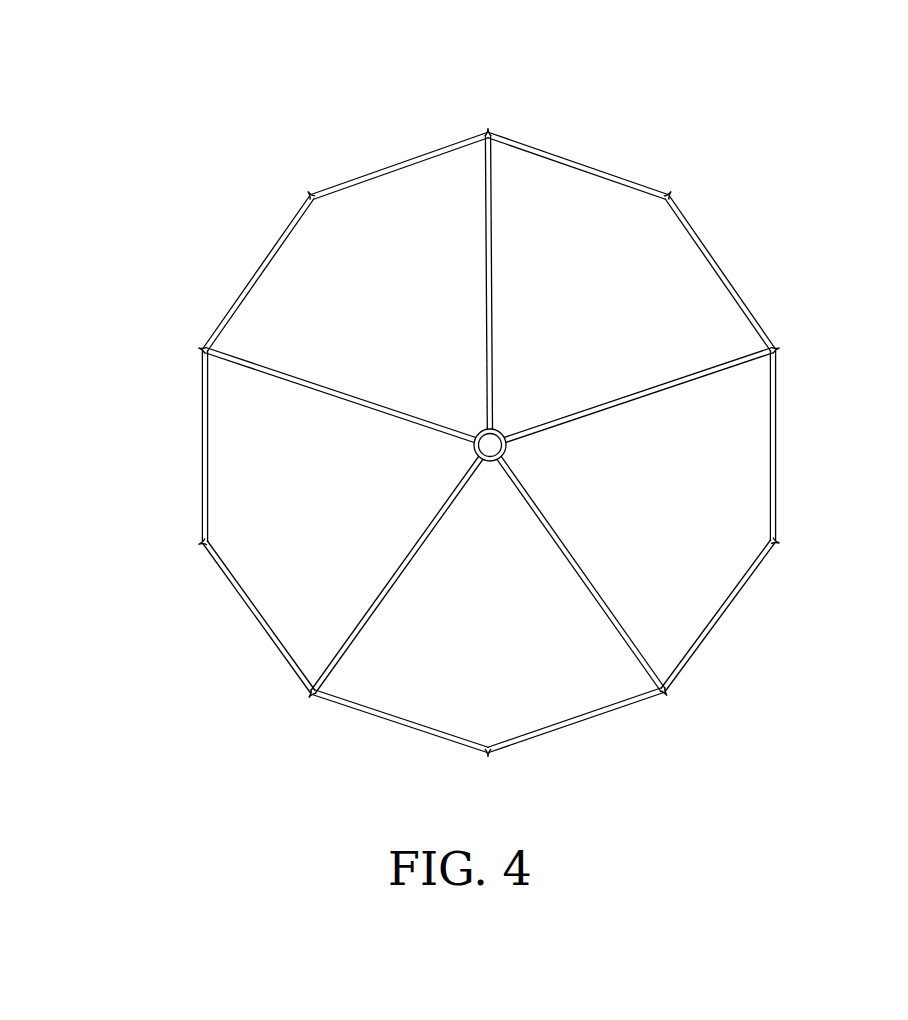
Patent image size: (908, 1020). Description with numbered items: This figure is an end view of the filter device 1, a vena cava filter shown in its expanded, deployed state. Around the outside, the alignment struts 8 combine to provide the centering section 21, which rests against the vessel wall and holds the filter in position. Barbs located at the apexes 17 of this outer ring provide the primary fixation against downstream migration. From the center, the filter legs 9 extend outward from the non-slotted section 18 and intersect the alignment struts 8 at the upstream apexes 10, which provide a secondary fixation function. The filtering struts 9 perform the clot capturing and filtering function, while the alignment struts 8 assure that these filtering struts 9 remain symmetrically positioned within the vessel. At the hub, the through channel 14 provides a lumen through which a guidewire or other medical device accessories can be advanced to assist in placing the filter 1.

The filter device 1 is at (626, 149).
The alignment struts 8 is at (776, 455).
The filter legs 9 is at (645, 648).
The upstream apexes 10 is at (492, 132).
The through channel 14 is at (492, 443).
The apexes 17 is at (305, 197).
The non-slotted section 18 is at (488, 447).
The centering section 21 is at (224, 585).